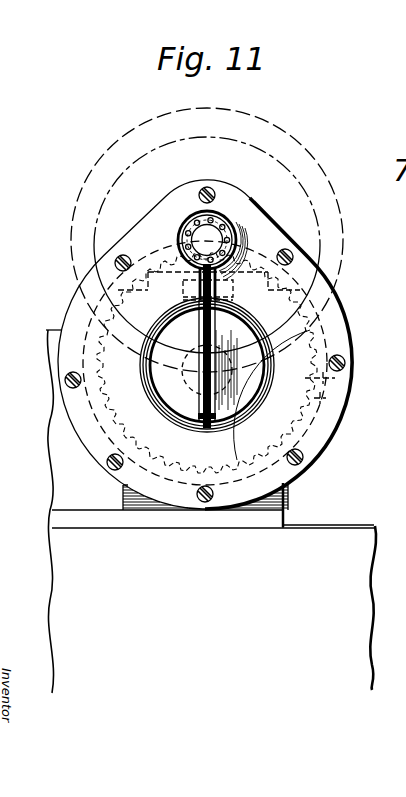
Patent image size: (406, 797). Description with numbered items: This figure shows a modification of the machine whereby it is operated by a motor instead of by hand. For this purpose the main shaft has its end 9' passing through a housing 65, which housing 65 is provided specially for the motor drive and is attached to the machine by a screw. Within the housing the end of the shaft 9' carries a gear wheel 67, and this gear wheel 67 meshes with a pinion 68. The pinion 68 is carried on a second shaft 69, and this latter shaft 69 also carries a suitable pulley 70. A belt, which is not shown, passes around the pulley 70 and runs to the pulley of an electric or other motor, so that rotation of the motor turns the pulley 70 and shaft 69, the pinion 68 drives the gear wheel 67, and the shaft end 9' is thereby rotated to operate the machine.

The end of the shaft 9' is at (191, 346).
The housing 65 is at (308, 438).
The gear wheel 67 is at (323, 370).
The pinion 68 is at (226, 214).
The shaft 69 is at (212, 239).
The pulley 70 is at (83, 253).